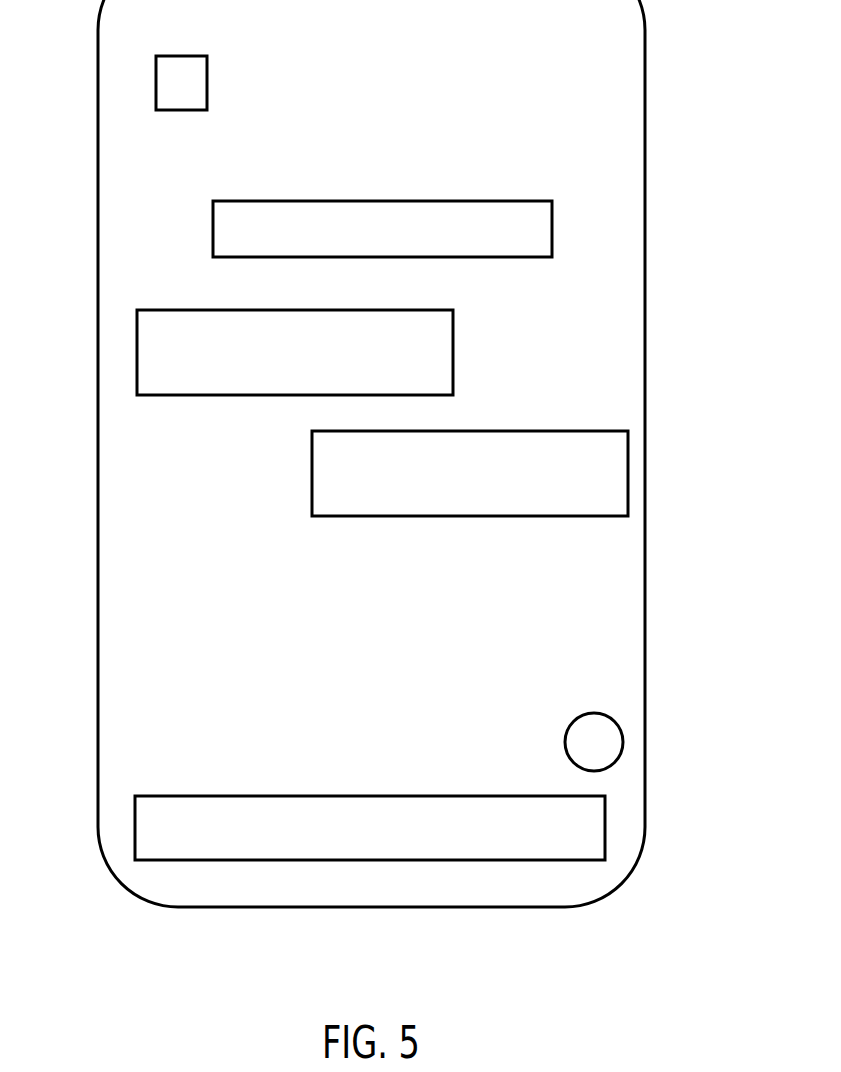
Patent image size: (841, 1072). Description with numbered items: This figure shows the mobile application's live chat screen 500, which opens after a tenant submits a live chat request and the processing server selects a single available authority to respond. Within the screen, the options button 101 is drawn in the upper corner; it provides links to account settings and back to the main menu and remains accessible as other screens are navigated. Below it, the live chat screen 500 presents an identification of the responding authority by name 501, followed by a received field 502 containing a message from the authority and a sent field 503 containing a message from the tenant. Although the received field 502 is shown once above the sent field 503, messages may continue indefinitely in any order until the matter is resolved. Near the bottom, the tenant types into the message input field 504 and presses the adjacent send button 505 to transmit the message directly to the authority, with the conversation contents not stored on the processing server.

The options button 101 is at (167, 90).
The live chat screen 500 is at (371, 172).
The identification of the responding authority by name 501 is at (370, 242).
The received field 502 is at (265, 360).
The sent field 503 is at (451, 490).
The message input field 504 is at (346, 842).
The send button 505 is at (603, 750).